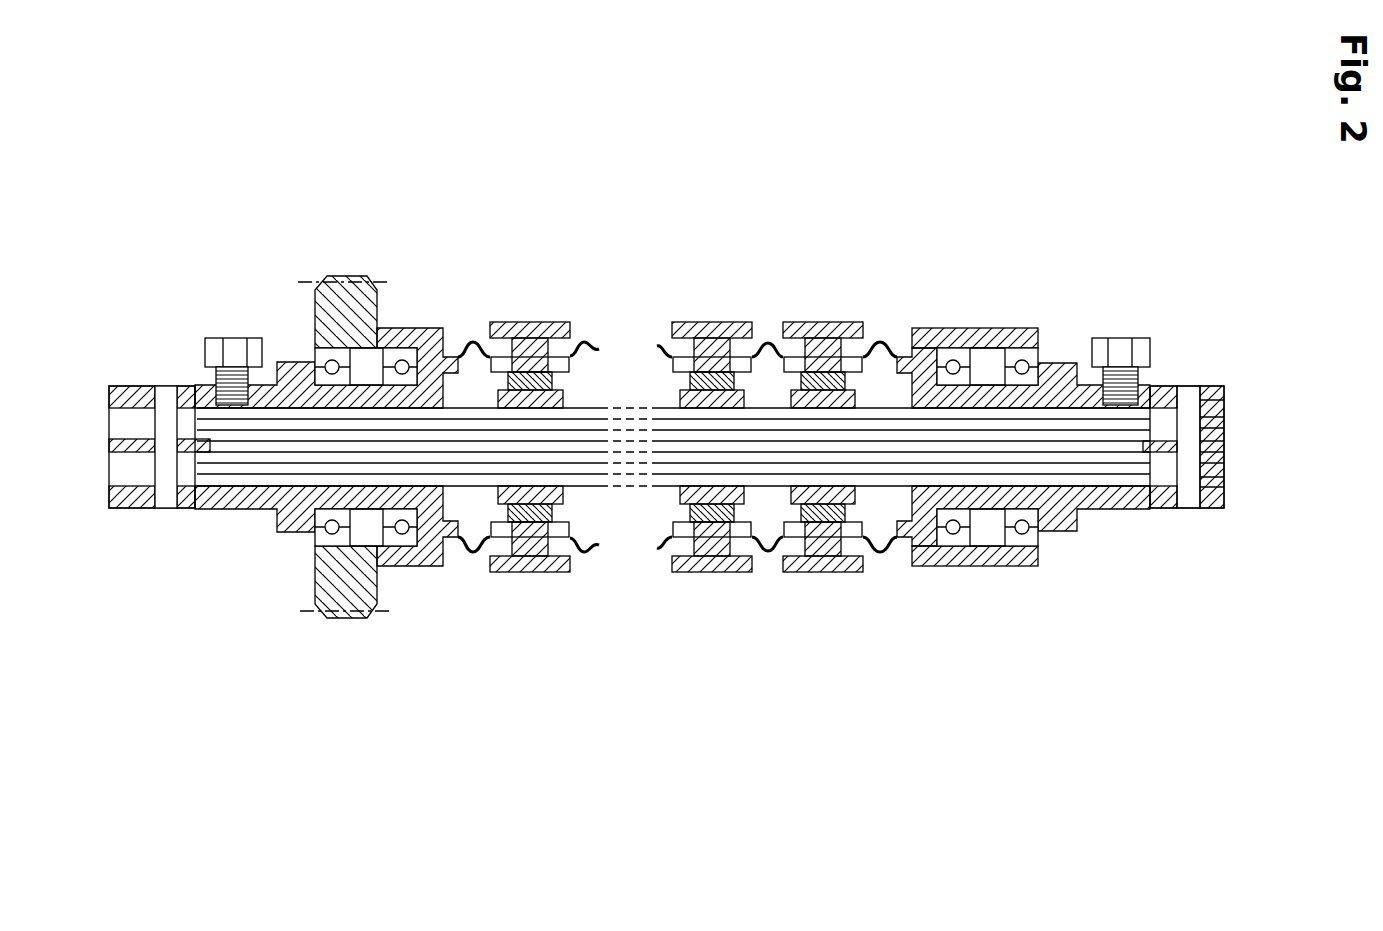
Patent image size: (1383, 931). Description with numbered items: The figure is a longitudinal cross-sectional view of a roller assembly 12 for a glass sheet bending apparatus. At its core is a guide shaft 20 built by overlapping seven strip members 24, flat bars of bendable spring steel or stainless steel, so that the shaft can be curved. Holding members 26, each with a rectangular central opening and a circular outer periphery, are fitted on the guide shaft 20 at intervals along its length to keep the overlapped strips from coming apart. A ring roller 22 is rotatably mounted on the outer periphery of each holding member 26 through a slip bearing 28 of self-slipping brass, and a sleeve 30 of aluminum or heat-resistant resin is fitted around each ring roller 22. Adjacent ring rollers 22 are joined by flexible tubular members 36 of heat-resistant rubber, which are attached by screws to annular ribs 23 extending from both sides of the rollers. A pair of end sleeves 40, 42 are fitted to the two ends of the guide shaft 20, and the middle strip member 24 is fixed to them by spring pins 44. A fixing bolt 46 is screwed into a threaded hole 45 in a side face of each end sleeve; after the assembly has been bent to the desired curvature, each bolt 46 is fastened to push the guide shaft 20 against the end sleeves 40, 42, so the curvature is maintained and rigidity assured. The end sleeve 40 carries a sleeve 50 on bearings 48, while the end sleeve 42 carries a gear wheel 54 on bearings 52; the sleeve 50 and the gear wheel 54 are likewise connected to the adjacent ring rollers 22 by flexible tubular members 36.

The roller assembly 12 is at (830, 248).
The guide shaft 20 is at (672, 468).
The ring roller 22 is at (528, 350).
The annular rib 23 is at (492, 362).
The strip member 24 is at (1152, 408).
The holding member 26 is at (570, 398).
The slip bearing 28 is at (682, 378).
The sleeve 30 is at (828, 350).
The flexible tubular member 36 is at (585, 345).
The end sleeve 40 is at (1062, 365).
The end sleeve 42 is at (232, 510).
The spring pin 44 is at (160, 433).
The threaded hole 45 is at (236, 338).
The fixing bolt 46 is at (207, 350).
The bearings 48 is at (955, 540).
The sleeve 50 is at (985, 332).
The bearings 52 is at (315, 355).
The gear wheel 54 is at (348, 616).